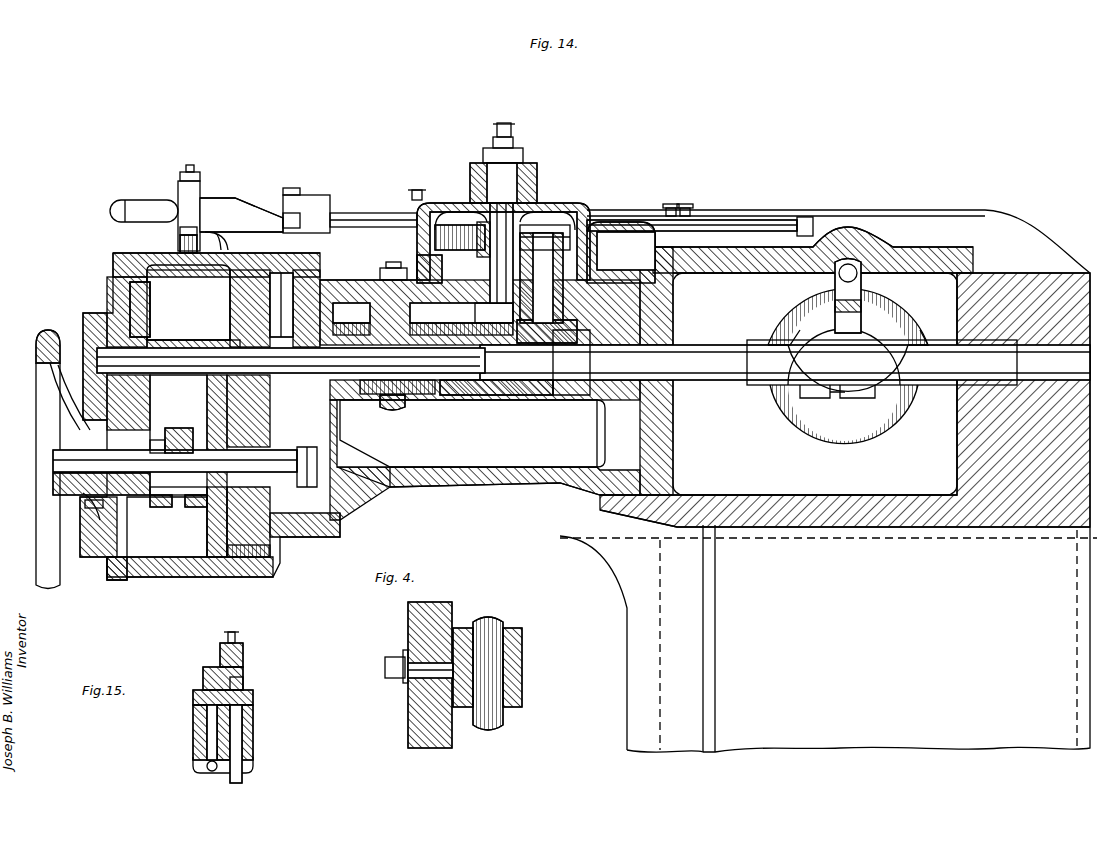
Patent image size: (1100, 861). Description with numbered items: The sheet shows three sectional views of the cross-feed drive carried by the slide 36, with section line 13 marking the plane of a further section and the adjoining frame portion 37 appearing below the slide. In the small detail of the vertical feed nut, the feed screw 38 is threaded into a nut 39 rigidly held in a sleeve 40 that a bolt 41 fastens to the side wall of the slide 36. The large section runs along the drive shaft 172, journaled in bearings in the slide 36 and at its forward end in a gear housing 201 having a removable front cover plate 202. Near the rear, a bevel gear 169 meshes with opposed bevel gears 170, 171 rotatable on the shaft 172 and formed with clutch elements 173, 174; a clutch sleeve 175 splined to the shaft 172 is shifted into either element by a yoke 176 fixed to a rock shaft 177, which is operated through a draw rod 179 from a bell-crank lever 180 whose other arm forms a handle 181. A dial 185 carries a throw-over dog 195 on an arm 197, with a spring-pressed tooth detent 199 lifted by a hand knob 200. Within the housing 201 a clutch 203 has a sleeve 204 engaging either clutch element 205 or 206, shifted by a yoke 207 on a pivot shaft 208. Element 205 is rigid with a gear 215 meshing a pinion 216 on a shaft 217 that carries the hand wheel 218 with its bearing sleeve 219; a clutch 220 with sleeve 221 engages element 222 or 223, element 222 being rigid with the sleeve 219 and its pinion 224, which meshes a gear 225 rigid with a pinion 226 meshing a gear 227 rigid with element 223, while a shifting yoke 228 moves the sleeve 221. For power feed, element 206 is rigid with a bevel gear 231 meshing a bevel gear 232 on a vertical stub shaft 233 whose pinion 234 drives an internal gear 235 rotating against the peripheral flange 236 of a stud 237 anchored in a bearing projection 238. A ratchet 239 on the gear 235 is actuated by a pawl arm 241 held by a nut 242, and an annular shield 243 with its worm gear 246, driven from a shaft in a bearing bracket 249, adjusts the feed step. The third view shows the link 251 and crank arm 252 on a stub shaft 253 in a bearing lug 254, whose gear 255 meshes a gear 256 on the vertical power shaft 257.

In FIG. 14, the section line 13— 13 is at (848, 200).
In FIG. 14, the slide 36 is at (495, 518).
In FIG. 4, the slide 36 is at (408, 716).
In FIG. 14, the frame leg 37 is at (627, 680).
In FIG. 4, the vertical feed screw 38 is at (503, 722).
In FIG. 4, the nut 39 is at (512, 691).
In FIG. 4, the sleeve 40 is at (520, 672).
In FIG. 4, the bolt 41 is at (420, 670).
In FIG. 14, the bevel gear 169 is at (905, 320).
In FIG. 14, the bevel gear 170 is at (778, 330).
In FIG. 14, the bevel gear 171 is at (922, 336).
In FIG. 14, the shaft 172 is at (708, 348).
In FIG. 14, the clutch element 173 is at (790, 405).
In FIG. 14, the clutch element 174 is at (908, 415).
In FIG. 14, the clutch sleeve 175 is at (825, 420).
In FIG. 14, the yoke 176 is at (882, 302).
In FIG. 14, the rock shaft 177 is at (852, 270).
In FIG. 14, the draw rod 179 is at (735, 220).
In FIG. 14, the bell-crank lever 180 is at (262, 212).
In FIG. 14, the handle 181 is at (140, 204).
In FIG. 14, the dial 185 is at (180, 243).
In FIG. 14, the throw-over dog 195 is at (198, 202).
In FIG. 14, the arm 197 is at (222, 240).
In FIG. 14, the tooth detent 199 is at (180, 231).
In FIG. 14, the hand knob 200 is at (190, 172).
In FIG. 14, the gear housing 201 is at (195, 568).
In FIG. 14, the front cover plate 202 is at (103, 552).
In FIG. 14, the clutch 203 is at (415, 410).
In FIG. 14, the sleeve 204 is at (372, 396).
In FIG. 14, the clutch element 205 is at (340, 328).
In FIG. 14, the clutch element 206 is at (455, 332).
In FIG. 14, the yoke 207 is at (392, 410).
In FIG. 14, the pivot shaft 208 is at (380, 272).
In FIG. 14, the gear 215 is at (293, 304).
In FIG. 14, the pinion 216 is at (300, 487).
In FIG. 14, the shaft 217 is at (65, 462).
In FIG. 14, the hand wheel 218 is at (36, 350).
In FIG. 14, the bearing sleeve 219 is at (55, 485).
In FIG. 14, the clutch 220 is at (180, 425).
In FIG. 14, the sleeve 221 is at (172, 500).
In FIG. 14, the clutch element 222 is at (157, 495).
In FIG. 14, the clutch element 223 is at (197, 495).
In FIG. 14, the pinion 224 is at (98, 518).
In FIG. 14, the gear 225 is at (150, 302).
In FIG. 14, the pinion 226 is at (210, 337).
In FIG. 14, the gear 227 is at (228, 560).
In FIG. 14, the shifting yoke 228 is at (165, 428).
In FIG. 14, the bevel gear 231 is at (515, 393).
In FIG. 14, the bevel gear 232 is at (580, 382).
In FIG. 14, the vertical stub shaft 233 is at (548, 232).
In FIG. 14, the pinion 234 is at (532, 222).
In FIG. 14, the internal gear 235 is at (590, 222).
In FIG. 14, the peripheral flange 236 is at (470, 240).
In FIG. 14, the stud 237 is at (493, 313).
In FIG. 14, the bearing projection 238 is at (395, 240).
In FIG. 14, the ratchet 239 is at (428, 210).
In FIG. 14, the pawl arm 241 is at (537, 175).
In FIG. 14, the nut 242 is at (518, 148).
In FIG. 14, the annular shield 243 is at (600, 258).
In FIG. 14, the worm gear 246 is at (415, 262).
In FIG. 14, the bearing bracket 249 is at (335, 213).
In FIG. 15, the link 251 is at (244, 650).
In FIG. 15, the crank arm 252 is at (247, 668).
In FIG. 15, the stub shaft 253 is at (207, 725).
In FIG. 15, the bearing lug 254 is at (254, 712).
In FIG. 15, the gear 255 is at (195, 695).
In FIG. 15, the gear 256 is at (250, 690).
In FIG. 15, the vertical shaft 257 is at (243, 768).